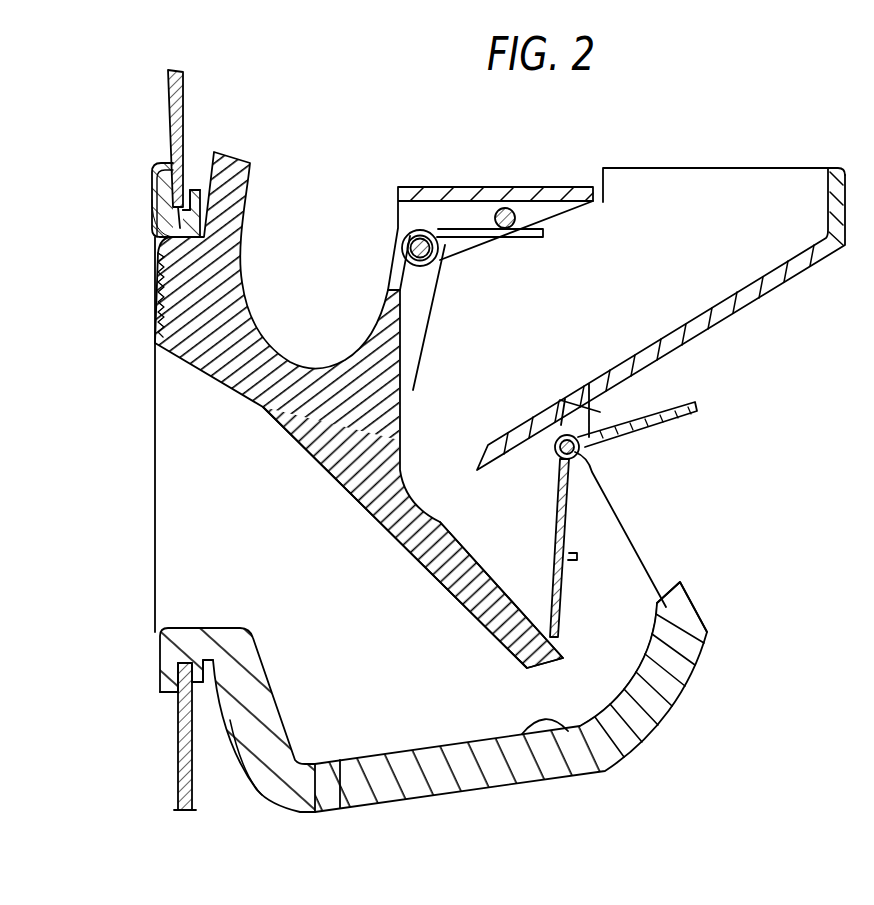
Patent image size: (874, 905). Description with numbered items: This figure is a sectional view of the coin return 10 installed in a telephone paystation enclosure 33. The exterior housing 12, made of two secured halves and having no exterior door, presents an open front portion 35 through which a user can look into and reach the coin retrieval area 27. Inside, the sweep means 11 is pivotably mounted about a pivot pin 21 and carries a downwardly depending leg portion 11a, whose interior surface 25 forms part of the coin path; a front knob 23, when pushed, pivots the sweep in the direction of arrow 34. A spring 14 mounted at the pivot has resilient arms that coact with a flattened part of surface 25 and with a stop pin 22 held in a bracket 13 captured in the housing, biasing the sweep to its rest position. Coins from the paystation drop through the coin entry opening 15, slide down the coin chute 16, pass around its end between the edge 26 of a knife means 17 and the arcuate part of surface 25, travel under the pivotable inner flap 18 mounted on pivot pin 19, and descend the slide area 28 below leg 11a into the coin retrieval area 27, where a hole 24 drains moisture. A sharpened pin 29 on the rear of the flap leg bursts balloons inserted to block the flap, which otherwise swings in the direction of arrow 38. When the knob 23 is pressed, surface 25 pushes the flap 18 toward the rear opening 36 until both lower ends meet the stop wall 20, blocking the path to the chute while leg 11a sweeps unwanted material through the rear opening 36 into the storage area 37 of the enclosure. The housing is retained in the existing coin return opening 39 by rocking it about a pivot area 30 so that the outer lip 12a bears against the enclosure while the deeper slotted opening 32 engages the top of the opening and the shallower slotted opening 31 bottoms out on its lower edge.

The coin return 10 is at (120, 474).
The sweep means 11 is at (243, 163).
The leg portion 11a is at (407, 553).
The housing 12 is at (480, 783).
The outer lip 12a is at (152, 183).
The bracket 13 is at (450, 187).
The spring 14 is at (531, 226).
The coin entry opening 15 is at (630, 168).
The coin chute 16 is at (755, 283).
The knife means 17 is at (605, 410).
The inner flap 18 is at (653, 423).
The pivot pin 19 is at (608, 487).
The stop wall 20 is at (665, 608).
The pivot pin 21 is at (402, 238).
The stop pin 22 is at (506, 208).
The knob 23 is at (153, 312).
The hole 24 is at (325, 800).
The interior surface 25 is at (410, 403).
The edge 26 is at (477, 472).
The coin retrieval area 27 is at (787, 287).
The slide area 28 is at (630, 680).
The pin 29 is at (570, 558).
The pivot area 30 is at (210, 660).
The shallower slotted opening 31 is at (178, 697).
The deeper slotted opening 32 is at (195, 215).
The telephone paystation enclosure 33 is at (167, 103).
The arrow 34 is at (436, 627).
The open front portion 35 is at (197, 537).
The rear opening 36 is at (603, 518).
The storage area 37 is at (743, 588).
The arrow 38 is at (618, 607).
The coin return opening 39 is at (180, 207).